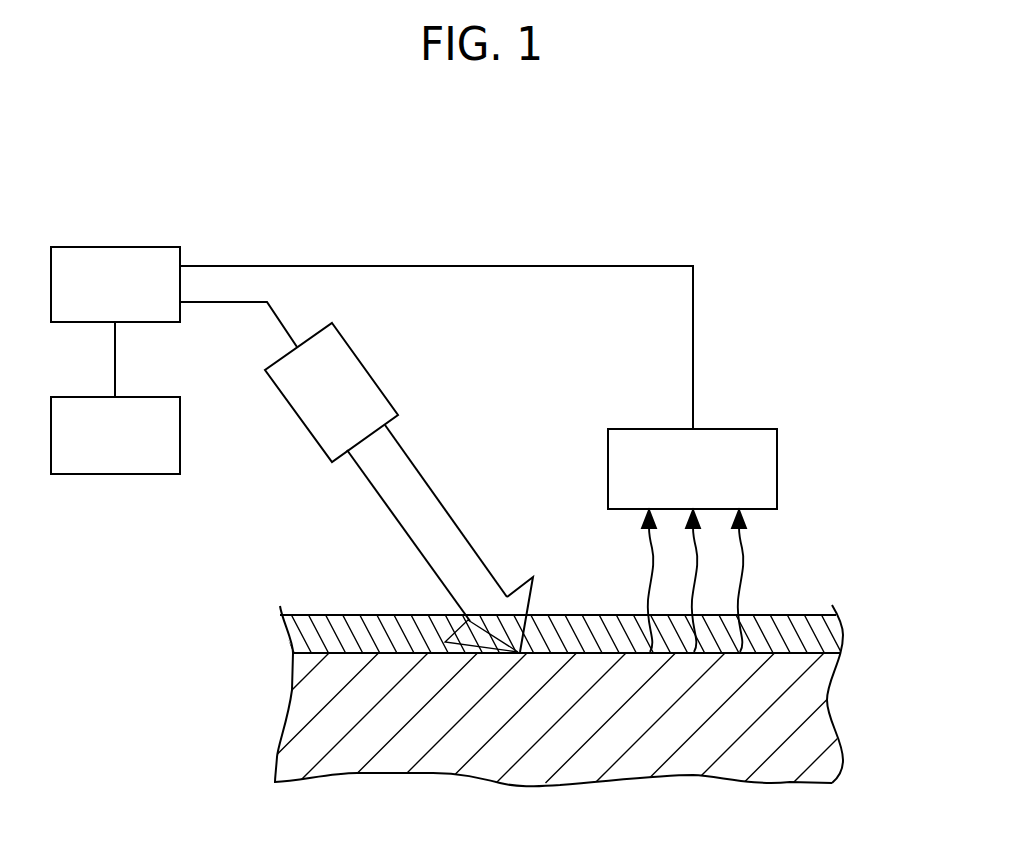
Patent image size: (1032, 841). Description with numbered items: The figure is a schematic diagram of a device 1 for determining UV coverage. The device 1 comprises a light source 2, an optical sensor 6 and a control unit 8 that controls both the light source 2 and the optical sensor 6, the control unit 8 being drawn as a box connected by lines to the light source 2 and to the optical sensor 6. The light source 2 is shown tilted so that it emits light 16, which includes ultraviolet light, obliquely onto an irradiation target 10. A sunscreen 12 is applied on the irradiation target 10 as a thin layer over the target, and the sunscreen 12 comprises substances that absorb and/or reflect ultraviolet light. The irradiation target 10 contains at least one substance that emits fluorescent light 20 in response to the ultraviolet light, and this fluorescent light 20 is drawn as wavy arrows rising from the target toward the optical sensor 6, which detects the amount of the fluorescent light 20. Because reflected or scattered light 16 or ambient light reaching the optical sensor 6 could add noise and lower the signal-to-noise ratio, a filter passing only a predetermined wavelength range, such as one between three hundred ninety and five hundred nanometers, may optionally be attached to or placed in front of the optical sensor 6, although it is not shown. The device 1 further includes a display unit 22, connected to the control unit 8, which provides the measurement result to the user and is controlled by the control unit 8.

The device for determining UV coverage 1 is at (767, 258).
The light source 2 is at (365, 363).
The optical sensor 6 is at (777, 471).
The control unit 8 is at (141, 246).
The irradiation target 10 is at (815, 705).
The sunscreen 12 is at (842, 634).
The light 16 is at (418, 472).
The fluorescent light 20 is at (743, 560).
The display unit 22 is at (142, 396).